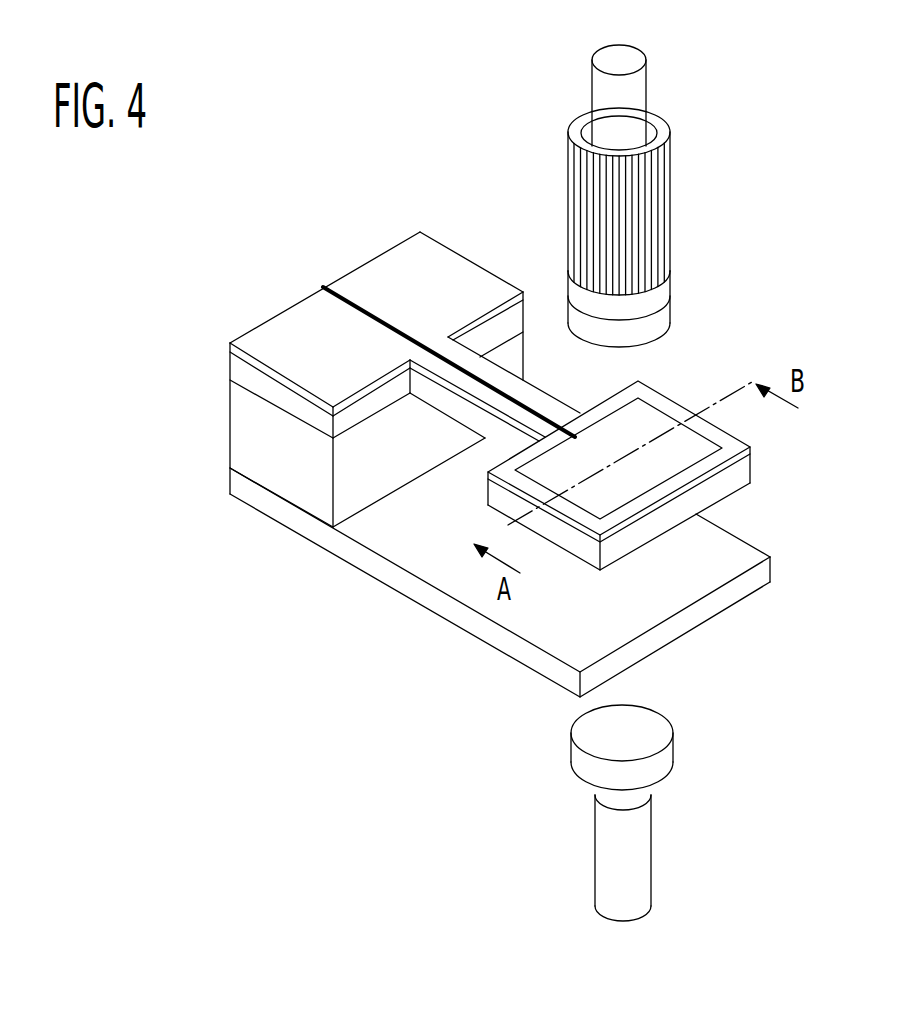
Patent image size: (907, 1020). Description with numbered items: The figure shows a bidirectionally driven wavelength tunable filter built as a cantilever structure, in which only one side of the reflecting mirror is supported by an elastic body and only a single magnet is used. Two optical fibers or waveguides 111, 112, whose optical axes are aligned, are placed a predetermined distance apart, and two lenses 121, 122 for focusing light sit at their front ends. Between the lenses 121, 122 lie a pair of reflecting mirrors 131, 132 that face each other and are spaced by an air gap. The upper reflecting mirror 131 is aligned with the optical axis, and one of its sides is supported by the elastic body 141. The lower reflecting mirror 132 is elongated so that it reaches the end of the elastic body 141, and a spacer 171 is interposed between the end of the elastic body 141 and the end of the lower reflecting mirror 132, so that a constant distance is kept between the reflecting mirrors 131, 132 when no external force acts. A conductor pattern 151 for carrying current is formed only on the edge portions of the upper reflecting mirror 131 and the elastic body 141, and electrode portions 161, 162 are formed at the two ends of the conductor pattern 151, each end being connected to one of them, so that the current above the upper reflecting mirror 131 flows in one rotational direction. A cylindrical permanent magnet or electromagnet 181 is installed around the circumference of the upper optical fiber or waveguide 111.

The optical fiber or waveguide 111 is at (623, 73).
The optical fiber or waveguide 112 is at (607, 837).
The lens 121 is at (662, 317).
The lens 122 is at (592, 748).
The upper reflecting mirror 131 is at (737, 479).
The lower reflecting mirror 132 is at (718, 545).
The elastic body 141 is at (467, 417).
The conductor pattern 151 is at (533, 400).
The electrode portion 161 is at (405, 277).
The electrode portion 162 is at (288, 335).
The spacer 171 is at (240, 417).
The permanent magnet or electromagnet 181 is at (663, 173).